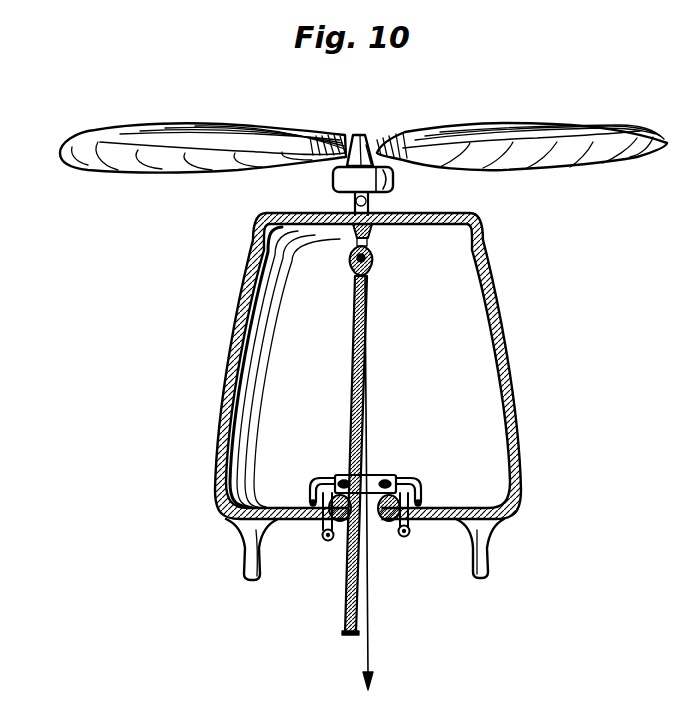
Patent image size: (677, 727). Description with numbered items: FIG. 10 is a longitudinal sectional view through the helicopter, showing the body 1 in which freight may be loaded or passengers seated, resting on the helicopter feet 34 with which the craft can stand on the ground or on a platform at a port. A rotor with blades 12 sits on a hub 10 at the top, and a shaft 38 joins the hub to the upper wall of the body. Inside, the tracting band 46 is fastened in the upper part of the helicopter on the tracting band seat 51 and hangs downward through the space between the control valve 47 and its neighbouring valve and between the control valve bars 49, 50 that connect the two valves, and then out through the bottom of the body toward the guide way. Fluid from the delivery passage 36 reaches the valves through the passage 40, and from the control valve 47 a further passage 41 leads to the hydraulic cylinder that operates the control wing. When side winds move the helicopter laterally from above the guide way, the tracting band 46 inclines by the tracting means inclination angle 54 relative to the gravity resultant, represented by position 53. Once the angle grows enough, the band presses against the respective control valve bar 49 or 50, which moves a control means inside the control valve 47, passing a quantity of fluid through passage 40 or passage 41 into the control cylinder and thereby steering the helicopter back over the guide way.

The helicopter body 1 is at (457, 351).
The propeller hub collar 10 is at (333, 184).
The propeller blades 12 is at (136, 160).
The helicopter feet 34 is at (246, 552).
The fluid passage 36 is at (322, 540).
The hub shaft 38 is at (372, 199).
The fluid passage 40 is at (308, 498).
The fluid passage 41 is at (425, 502).
The tracting band 46 is at (355, 378).
The control valve 47 is at (374, 478).
The control valve bar 49 is at (343, 480).
The control valve bar 50 is at (391, 478).
The tracting band seat 51 is at (372, 262).
The position of the gravity resultant 53 is at (372, 657).
The tracting means inclination angle 54 is at (370, 603).